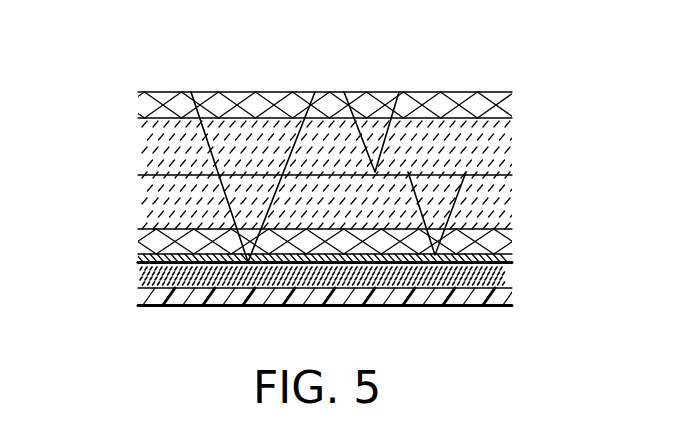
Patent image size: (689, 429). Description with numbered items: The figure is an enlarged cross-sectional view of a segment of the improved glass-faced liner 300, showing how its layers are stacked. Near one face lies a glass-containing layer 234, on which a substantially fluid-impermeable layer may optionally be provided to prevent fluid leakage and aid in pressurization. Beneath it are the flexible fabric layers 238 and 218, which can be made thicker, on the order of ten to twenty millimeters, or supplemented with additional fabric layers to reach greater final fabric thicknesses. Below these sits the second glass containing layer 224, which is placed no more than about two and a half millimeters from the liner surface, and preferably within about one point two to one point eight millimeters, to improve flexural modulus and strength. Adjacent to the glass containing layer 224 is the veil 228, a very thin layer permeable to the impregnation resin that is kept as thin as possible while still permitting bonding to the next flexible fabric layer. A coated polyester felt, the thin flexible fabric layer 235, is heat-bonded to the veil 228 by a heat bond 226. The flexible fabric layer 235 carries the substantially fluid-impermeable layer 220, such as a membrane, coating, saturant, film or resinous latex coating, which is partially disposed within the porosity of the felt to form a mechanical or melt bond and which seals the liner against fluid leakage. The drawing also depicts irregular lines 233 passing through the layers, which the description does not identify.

The flexible fabric layer 218 is at (510, 195).
The substantially fluid-impermeable layer 220 is at (258, 298).
The second glass containing layer 224 is at (503, 243).
The heat bond 226 is at (509, 259).
The veil 228 is at (140, 261).
The cracks / defects 233 is at (354, 131).
The glass-containing layer 234 is at (510, 109).
The thin flexible fabric layer 235 is at (505, 279).
The flexible fabric layer 238 is at (158, 152).
The glass-faced liner 300 is at (335, 192).